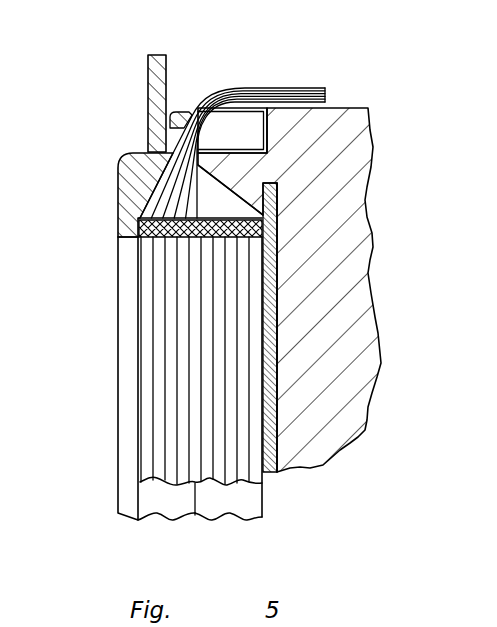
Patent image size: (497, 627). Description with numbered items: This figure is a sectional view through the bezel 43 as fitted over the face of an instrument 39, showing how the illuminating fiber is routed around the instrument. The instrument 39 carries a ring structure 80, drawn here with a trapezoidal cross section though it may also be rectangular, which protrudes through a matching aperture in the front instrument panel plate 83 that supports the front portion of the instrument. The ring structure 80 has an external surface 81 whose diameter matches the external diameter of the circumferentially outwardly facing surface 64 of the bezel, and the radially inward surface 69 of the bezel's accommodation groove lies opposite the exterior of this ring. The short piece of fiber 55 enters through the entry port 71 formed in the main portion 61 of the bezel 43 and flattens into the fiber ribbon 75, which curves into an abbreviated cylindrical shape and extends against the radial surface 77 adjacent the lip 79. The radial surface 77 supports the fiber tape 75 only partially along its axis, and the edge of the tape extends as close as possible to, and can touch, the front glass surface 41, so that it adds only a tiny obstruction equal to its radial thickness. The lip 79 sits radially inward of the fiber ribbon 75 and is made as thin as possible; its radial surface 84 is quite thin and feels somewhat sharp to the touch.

The instrument 39 is at (358, 108).
The front glass surface 41 is at (277, 410).
The bezel 43 is at (224, 518).
The short piece of fiber 55 is at (303, 88).
The main portion 61 is at (190, 111).
The circumferentially outwardly facing surface 64 is at (143, 153).
The radially inward surface 69 is at (208, 165).
The entry port 71 is at (240, 126).
The fiber ribbon 75 is at (158, 401).
The radial surface 77 is at (171, 518).
The lip 79 is at (153, 238).
The ring structure 80 is at (277, 260).
The external surface 81 is at (215, 154).
The front instrument panel plate 83 is at (148, 78).
The radial surface 84 is at (130, 341).